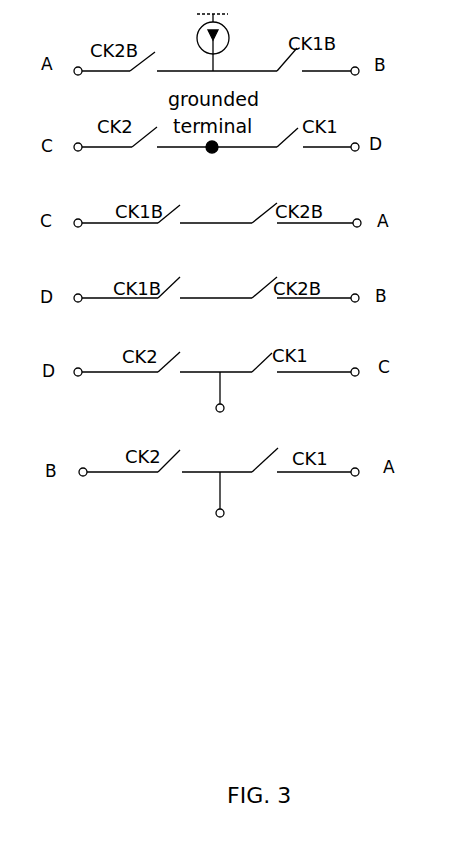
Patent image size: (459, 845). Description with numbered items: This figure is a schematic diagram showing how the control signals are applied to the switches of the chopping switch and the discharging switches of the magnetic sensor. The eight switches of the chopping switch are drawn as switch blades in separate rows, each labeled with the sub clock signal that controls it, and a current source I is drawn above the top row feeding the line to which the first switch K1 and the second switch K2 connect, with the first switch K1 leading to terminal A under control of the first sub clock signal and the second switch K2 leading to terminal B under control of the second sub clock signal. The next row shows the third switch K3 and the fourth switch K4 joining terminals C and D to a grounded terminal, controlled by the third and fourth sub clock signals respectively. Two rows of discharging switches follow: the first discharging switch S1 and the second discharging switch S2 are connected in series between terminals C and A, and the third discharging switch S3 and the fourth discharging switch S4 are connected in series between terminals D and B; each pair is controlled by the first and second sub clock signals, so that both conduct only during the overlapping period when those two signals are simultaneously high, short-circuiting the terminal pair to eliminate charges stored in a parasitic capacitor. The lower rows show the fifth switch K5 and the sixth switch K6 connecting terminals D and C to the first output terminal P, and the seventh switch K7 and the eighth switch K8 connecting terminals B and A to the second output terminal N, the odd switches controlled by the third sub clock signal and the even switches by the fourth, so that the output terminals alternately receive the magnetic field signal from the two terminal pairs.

The current source I is at (213, 42).
The first switch K1 is at (144, 72).
The second switch K2 is at (288, 72).
The third switch K3 is at (145, 149).
The fourth switch K4 is at (288, 149).
The fifth switch K5 is at (167, 377).
The sixth switch K6 is at (269, 375).
The seventh switch K7 is at (161, 476).
The eighth switch K8 is at (270, 471).
The first discharging switch S1 is at (264, 229).
The second discharging switch S2 is at (169, 230).
The third discharging switch S3 is at (264, 302).
The fourth discharging switch S4 is at (169, 302).
The first output terminal P is at (228, 398).
The second output terminal N is at (230, 503).